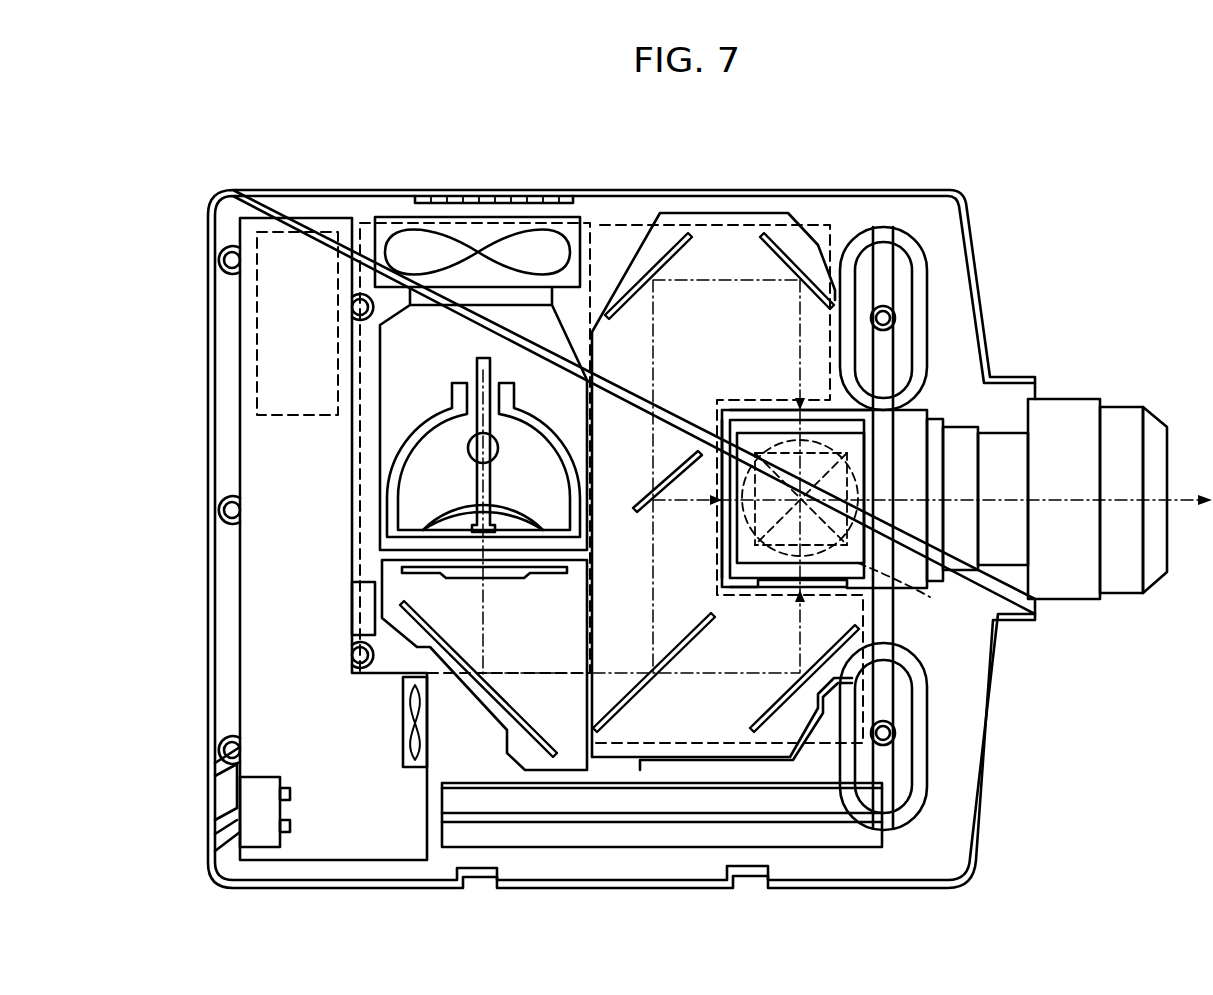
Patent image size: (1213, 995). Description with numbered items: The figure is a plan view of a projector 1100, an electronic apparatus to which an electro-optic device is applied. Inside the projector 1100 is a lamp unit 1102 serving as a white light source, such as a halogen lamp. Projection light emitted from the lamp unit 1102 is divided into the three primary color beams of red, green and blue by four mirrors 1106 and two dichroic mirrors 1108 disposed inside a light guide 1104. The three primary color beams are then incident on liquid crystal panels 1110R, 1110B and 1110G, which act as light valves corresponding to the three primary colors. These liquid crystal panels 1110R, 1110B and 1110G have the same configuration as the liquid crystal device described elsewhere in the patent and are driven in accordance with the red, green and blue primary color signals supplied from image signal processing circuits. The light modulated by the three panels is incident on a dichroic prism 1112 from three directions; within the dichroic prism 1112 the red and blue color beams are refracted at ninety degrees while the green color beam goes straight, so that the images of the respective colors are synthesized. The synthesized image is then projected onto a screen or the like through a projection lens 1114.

The projector 1100 is at (993, 195).
The lamp unit 1102 is at (533, 342).
The light guide 1104 is at (650, 235).
The mirror 1106 is at (777, 257).
The dichroic mirror 1108 is at (643, 535).
The liquid crystal panel 1110R is at (780, 363).
The liquid crystal panel 1110G is at (722, 467).
The liquid crystal panel 1110B is at (752, 585).
The dichroic prism 1112 is at (925, 585).
The projection lens 1114 is at (1133, 415).